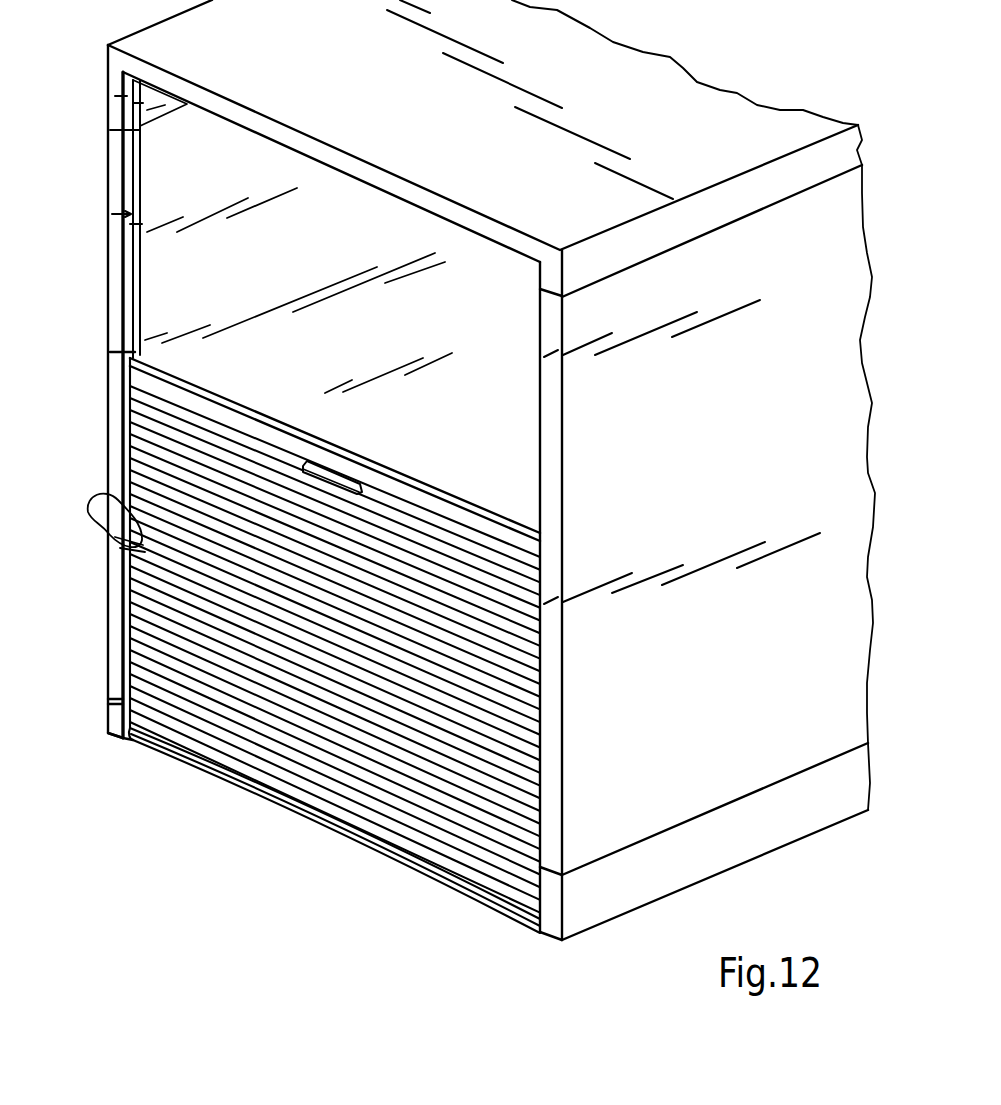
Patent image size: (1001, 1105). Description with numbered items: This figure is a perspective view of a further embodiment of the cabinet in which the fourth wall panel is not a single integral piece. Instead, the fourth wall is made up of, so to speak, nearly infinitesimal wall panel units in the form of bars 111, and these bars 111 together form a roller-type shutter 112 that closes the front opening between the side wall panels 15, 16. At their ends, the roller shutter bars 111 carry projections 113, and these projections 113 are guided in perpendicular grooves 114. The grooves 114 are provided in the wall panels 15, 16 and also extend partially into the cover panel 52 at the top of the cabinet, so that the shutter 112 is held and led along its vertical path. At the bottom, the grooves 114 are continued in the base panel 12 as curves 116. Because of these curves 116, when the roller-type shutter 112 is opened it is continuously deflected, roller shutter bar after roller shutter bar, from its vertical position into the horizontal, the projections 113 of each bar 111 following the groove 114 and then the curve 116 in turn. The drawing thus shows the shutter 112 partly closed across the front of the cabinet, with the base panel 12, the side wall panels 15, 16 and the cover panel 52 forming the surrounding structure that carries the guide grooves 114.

The base panel 12 is at (763, 822).
The wall panel 15 is at (737, 532).
The wall panel 16 is at (163, 168).
The cover panel 52 is at (670, 86).
The bars 111 is at (95, 514).
The roller-type shutter 112 is at (268, 480).
The projections 113 is at (136, 355).
The grooves 114 is at (136, 190).
The curves 116 is at (130, 743).